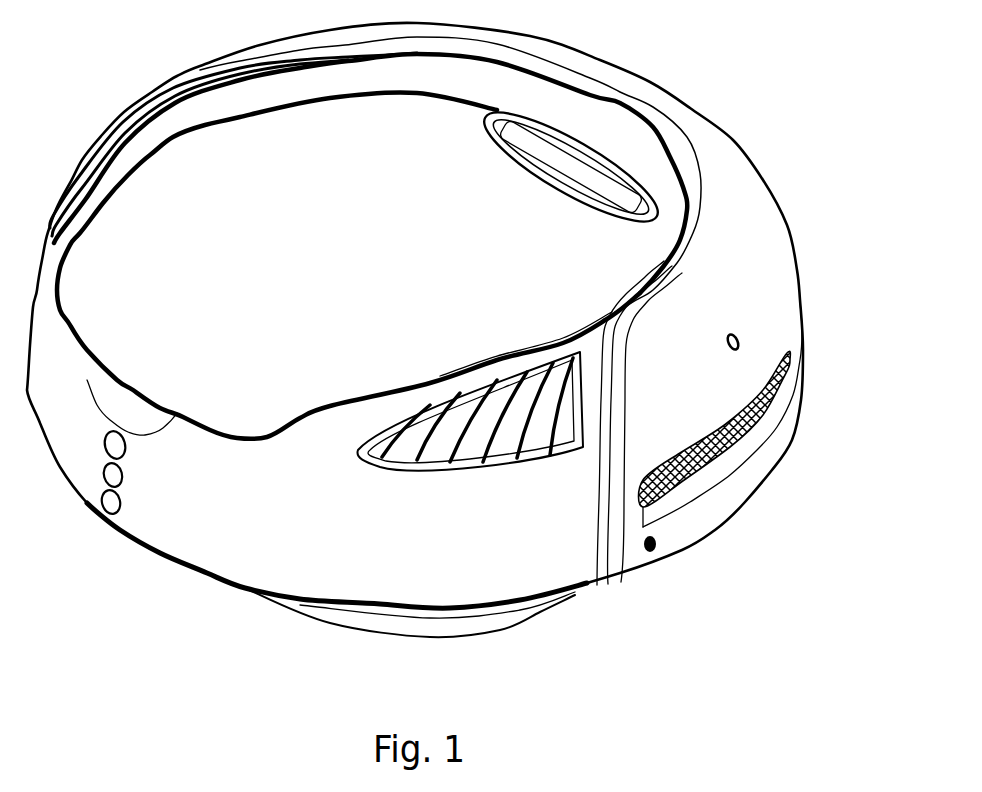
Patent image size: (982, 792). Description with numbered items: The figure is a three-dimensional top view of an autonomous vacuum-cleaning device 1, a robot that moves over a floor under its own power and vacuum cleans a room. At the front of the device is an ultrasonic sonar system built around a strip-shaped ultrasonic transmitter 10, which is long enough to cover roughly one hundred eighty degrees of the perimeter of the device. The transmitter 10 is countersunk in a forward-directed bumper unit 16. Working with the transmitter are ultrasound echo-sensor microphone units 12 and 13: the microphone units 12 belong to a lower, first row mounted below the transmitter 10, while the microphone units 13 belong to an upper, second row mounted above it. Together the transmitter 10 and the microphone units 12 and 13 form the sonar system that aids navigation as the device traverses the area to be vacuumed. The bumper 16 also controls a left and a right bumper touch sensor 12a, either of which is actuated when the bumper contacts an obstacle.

The autonomous vacuum-cleaning device 1 is at (273, 223).
The ultrasonic transmitter 10 is at (748, 447).
The ultrasound echo-sensor microphone unit 12 is at (800, 393).
The bumper touch sensor 12a is at (656, 545).
The ultrasound echo-sensor microphone unit 13 is at (740, 340).
The bumper unit 16 is at (715, 147).